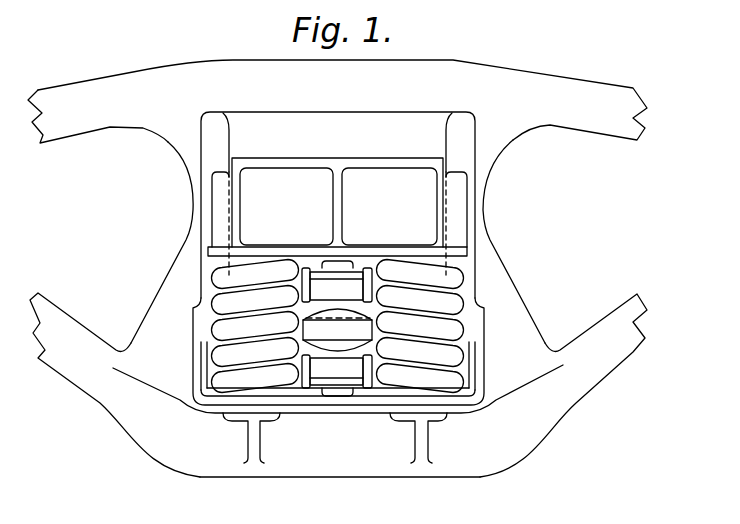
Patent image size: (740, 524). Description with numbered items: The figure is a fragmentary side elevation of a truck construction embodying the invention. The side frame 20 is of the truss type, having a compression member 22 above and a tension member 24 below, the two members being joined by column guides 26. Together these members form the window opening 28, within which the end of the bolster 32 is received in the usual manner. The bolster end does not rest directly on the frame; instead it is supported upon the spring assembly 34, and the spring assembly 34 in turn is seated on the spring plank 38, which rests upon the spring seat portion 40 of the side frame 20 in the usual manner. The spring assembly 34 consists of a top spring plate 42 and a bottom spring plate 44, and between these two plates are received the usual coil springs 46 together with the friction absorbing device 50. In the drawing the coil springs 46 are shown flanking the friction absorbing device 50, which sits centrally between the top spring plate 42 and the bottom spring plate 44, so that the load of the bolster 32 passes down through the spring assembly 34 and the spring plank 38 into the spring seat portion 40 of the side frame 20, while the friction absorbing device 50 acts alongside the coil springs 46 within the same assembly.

The side frame 20 is at (258, 479).
The compression member 22 is at (497, 68).
The tension member 24 is at (550, 427).
The column guides 26 is at (163, 297).
The window opening 28 is at (287, 113).
The bolster 32 is at (370, 164).
The spring assembly 34 is at (245, 366).
The spring plank 38 is at (480, 352).
The spring seat portion 40 is at (366, 404).
The top spring plate 42 is at (466, 256).
The bottom spring plate 44 is at (448, 397).
The coil springs 46 is at (218, 312).
The friction absorbing device 50 is at (337, 326).